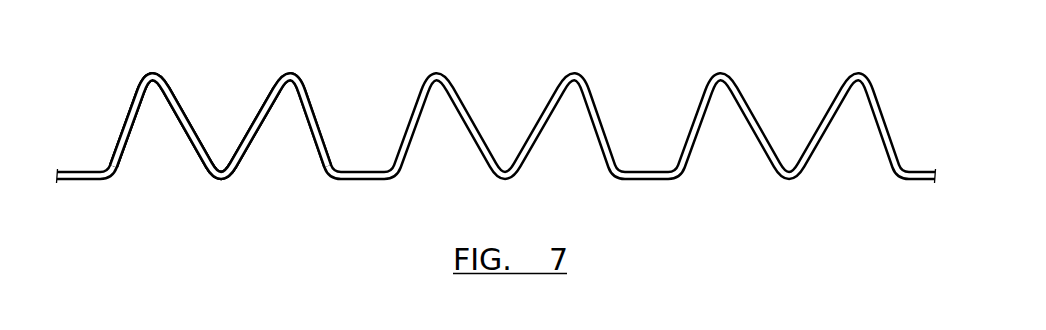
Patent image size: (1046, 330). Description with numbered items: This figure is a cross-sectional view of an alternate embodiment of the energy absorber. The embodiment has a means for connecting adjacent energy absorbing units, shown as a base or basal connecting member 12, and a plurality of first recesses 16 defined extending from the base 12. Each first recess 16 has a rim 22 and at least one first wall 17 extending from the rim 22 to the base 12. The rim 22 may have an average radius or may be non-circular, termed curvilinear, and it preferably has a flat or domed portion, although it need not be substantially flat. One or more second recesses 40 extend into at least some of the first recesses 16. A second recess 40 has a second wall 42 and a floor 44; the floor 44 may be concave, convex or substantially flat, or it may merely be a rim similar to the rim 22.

The base 12 is at (87, 181).
The first recess 16 is at (155, 133).
The first wall 17 is at (122, 130).
The rim 22 is at (153, 72).
The second recess 40 is at (214, 133).
The second wall 42 is at (252, 143).
The floor 44 is at (221, 181).